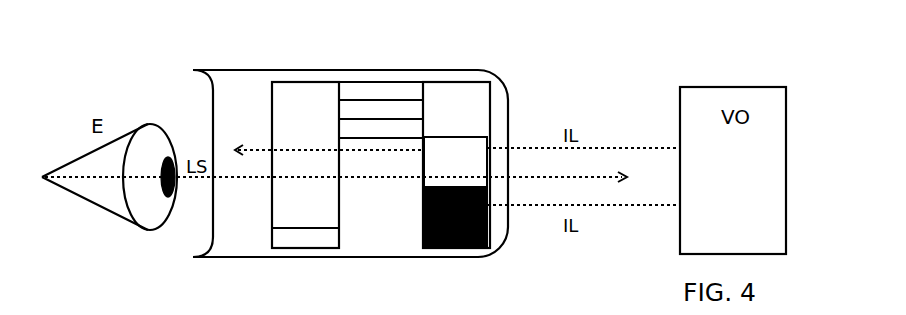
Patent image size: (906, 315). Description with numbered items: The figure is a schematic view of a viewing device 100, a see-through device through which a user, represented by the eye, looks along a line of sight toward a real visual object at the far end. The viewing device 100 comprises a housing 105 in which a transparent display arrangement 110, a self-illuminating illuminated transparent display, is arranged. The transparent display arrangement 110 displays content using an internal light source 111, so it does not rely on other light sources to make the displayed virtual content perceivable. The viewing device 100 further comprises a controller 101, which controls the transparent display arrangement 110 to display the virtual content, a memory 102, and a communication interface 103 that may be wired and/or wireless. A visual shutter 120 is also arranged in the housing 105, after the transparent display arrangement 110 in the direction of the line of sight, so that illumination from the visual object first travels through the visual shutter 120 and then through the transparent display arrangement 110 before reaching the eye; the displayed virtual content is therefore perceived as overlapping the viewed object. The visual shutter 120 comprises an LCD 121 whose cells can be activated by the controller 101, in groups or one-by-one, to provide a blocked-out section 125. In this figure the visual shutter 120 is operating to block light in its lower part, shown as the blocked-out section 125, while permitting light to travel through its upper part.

The viewing device 100 is at (176, 42).
The housing 105 is at (337, 70).
The transparent display arrangement 110 is at (305, 165).
The internal light source 111 is at (305, 238).
The controller 101 is at (381, 92).
The memory 102 is at (381, 111).
The communication interface 103 is at (381, 130).
The visual shutter 120 is at (456, 165).
The LCD 121 is at (488, 132).
The blocked-out section 125 is at (488, 243).